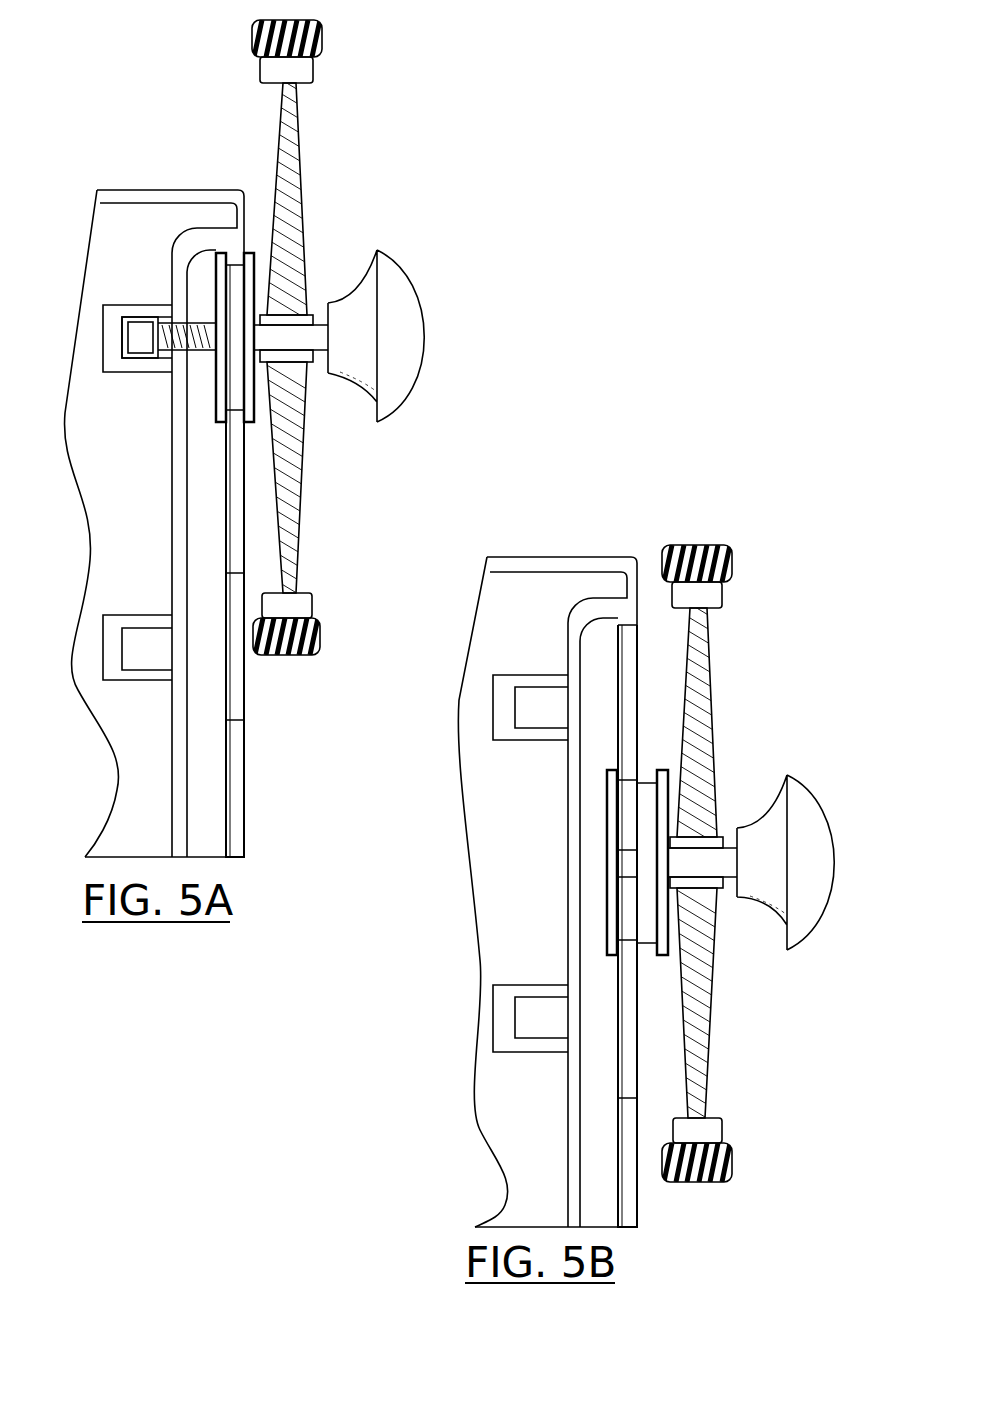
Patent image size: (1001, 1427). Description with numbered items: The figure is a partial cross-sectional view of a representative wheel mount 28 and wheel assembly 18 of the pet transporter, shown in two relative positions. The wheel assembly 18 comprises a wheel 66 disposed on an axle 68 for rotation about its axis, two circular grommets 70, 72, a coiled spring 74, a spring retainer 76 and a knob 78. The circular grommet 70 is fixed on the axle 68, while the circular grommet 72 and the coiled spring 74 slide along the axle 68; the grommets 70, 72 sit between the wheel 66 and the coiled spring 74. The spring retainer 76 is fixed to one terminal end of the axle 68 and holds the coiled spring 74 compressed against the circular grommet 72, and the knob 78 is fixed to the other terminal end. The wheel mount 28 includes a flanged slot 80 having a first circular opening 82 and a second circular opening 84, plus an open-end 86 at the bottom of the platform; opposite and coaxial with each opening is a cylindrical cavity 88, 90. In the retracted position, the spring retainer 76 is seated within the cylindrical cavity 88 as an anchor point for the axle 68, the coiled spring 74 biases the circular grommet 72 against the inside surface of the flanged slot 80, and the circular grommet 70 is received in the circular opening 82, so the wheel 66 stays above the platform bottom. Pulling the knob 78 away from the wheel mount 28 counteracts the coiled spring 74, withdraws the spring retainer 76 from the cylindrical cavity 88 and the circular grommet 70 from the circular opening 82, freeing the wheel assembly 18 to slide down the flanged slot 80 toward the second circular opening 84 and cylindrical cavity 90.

In FIG. 5A, the wheel assembly 18 is at (481, 296).
In FIG. 5B, the wheel assembly 18 is at (856, 861).
In FIG. 5A, the wheel mount 28 is at (172, 188).
In FIG. 5B, the wheel mount 28 is at (588, 556).
In FIG. 5A, the wheel 66 is at (318, 48).
In FIG. 5B, the wheel 66 is at (725, 1180).
In FIG. 5A, the axle 68 is at (318, 340).
In FIG. 5B, the axle 68 is at (730, 860).
In FIG. 5A, the circular grommet 70 is at (256, 276).
In FIG. 5B, the circular grommet 70 is at (668, 770).
In FIG. 5A, the circular grommet 72 is at (216, 290).
In FIG. 5B, the circular grommet 72 is at (608, 805).
In FIG. 5A, the coiled spring 74 is at (172, 348).
In FIG. 5A, the spring retainer 76 is at (140, 358).
In FIG. 5B, the spring retainer 76 is at (600, 866).
In FIG. 5A, the knob 78 is at (413, 390).
In FIG. 5B, the knob 78 is at (795, 950).
In FIG. 5A, the flanged slot 80 is at (231, 541).
In FIG. 5B, the flanged slot 80 is at (624, 909).
In FIG. 5B, the circular opening 82 is at (633, 655).
In FIG. 5A, the circular opening 84 is at (243, 681).
In FIG. 5B, the circular opening 84 is at (633, 1048).
In FIG. 5A, the open-end 86 is at (231, 861).
In FIG. 5B, the open-end 86 is at (625, 1229).
In FIG. 5A, the cylindrical cavity 88 is at (146, 312).
In FIG. 5B, the cylindrical cavity 88 is at (546, 689).
In FIG. 5A, the cylindrical cavity 90 is at (160, 656).
In FIG. 5B, the cylindrical cavity 90 is at (545, 1026).